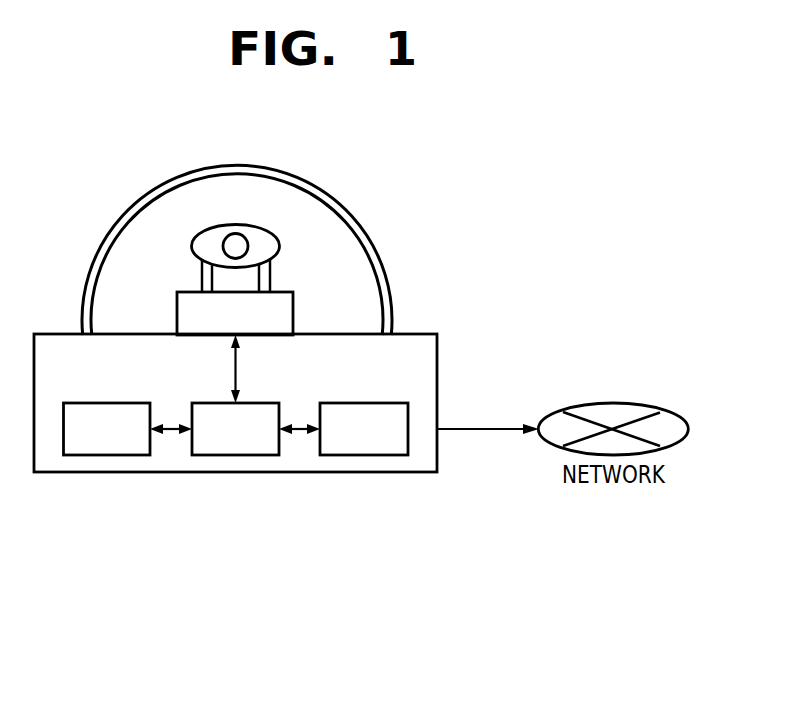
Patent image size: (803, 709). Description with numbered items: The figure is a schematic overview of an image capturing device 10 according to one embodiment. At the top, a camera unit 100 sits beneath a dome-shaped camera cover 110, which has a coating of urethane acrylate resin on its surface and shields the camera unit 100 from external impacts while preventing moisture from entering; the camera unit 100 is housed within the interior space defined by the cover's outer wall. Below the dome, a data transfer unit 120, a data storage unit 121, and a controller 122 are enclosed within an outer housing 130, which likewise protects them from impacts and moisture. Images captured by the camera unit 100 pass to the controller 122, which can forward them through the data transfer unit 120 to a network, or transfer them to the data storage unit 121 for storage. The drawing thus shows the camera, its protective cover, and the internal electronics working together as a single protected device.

The image capturing device 10 is at (280, 583).
The camera unit 100 is at (263, 240).
The camera cover 110 is at (233, 166).
The data transfer unit 120 is at (368, 442).
The data storage unit 121 is at (111, 442).
The controller 122 is at (240, 442).
The outer housing 130 is at (437, 349).